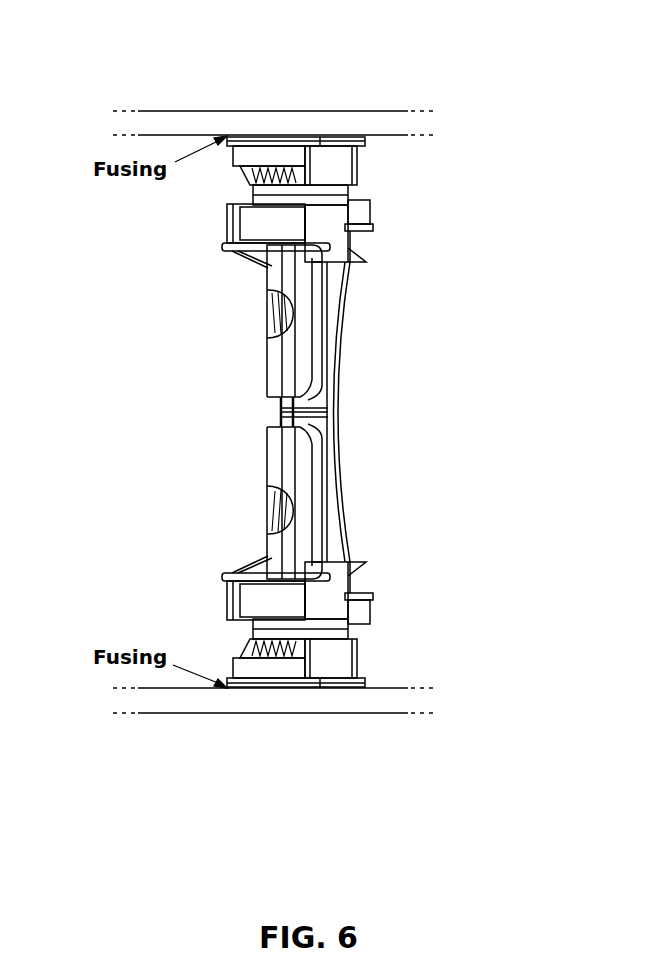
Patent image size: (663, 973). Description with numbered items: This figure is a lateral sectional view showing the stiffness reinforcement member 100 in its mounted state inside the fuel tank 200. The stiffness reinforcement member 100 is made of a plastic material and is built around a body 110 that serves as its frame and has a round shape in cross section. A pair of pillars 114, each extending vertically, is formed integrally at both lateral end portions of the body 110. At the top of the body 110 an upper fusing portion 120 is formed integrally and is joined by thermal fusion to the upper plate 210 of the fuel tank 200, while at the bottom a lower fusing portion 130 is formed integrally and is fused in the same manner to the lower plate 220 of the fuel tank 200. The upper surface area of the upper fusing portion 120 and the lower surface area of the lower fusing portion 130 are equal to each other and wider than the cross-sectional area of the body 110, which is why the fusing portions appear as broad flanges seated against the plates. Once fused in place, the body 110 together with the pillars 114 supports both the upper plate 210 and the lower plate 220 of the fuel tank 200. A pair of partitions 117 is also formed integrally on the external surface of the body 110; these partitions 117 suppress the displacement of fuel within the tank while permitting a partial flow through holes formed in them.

The stiffness reinforcement member 100 is at (228, 455).
The body 110 is at (373, 245).
The pillars 114 is at (325, 395).
The partitions 117 is at (277, 368).
The upper fusing portion 120 is at (373, 162).
The lower fusing portion 130 is at (372, 643).
The fuel tank 200 is at (293, 105).
The upper plate 210 is at (355, 122).
The lower plate 220 is at (332, 702).